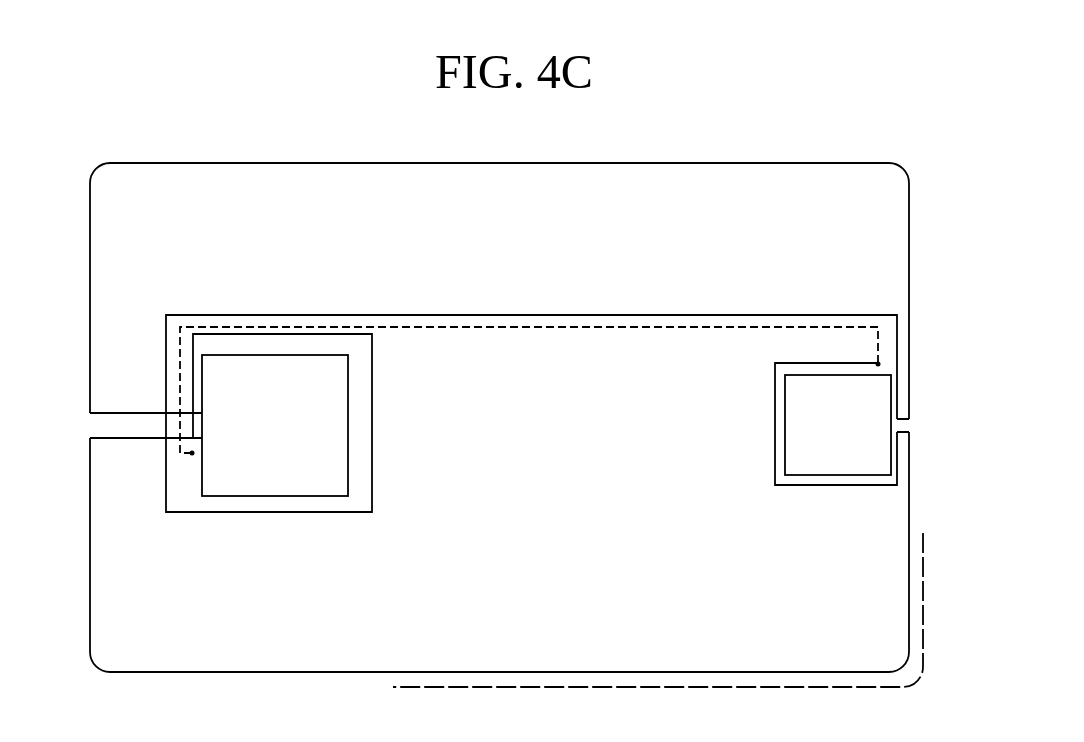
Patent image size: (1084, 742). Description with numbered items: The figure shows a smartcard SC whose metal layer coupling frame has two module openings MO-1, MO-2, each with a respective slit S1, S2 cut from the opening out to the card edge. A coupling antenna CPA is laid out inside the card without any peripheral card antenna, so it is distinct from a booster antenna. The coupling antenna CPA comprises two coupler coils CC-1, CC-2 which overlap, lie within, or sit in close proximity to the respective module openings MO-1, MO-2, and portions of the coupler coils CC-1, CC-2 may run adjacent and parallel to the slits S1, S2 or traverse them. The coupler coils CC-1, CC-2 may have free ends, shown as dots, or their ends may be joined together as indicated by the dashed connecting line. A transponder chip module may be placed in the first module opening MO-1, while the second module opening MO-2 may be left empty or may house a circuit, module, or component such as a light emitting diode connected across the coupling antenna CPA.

The smartcard SC is at (165, 99).
The coupling antenna CPA is at (592, 304).
The first slit S1 is at (83, 428).
The second slit S2 is at (918, 423).
The first coupler coil CC-1 is at (243, 518).
The second coupler coil CC-2 is at (797, 490).
The first module opening MO-1 is at (275, 425).
The second module opening MO-2 is at (838, 425).